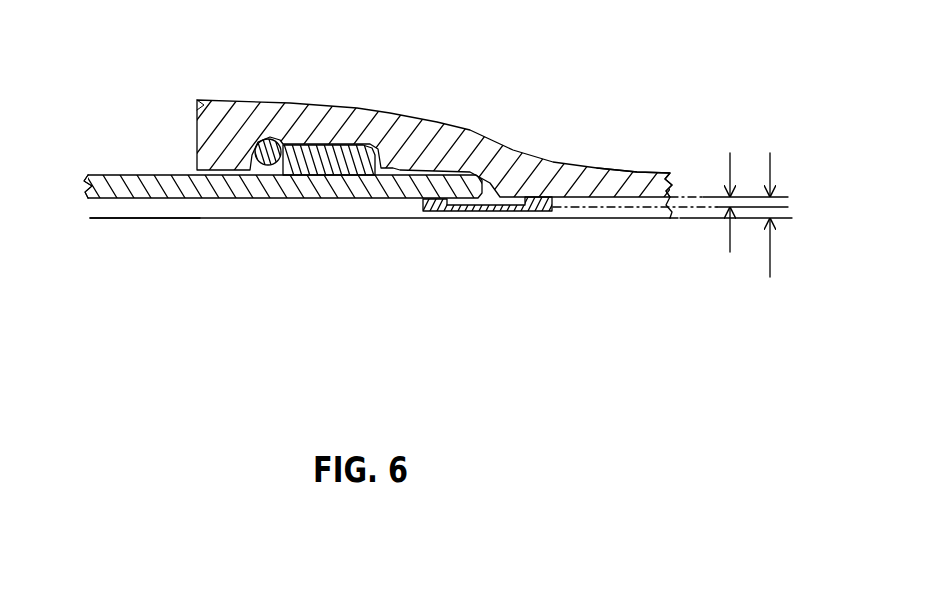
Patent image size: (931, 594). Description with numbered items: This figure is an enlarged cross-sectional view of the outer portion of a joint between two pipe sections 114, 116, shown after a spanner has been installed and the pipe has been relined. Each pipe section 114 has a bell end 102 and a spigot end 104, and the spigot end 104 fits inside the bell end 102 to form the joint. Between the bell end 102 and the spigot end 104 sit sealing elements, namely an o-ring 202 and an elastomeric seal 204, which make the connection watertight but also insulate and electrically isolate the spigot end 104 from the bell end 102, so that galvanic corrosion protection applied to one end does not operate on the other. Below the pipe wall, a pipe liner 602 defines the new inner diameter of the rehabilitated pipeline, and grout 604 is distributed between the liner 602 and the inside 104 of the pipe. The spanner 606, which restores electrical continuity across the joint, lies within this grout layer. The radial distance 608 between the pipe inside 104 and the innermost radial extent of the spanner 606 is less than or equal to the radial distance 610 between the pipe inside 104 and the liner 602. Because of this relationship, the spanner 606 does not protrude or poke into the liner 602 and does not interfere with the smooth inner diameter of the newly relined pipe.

The bell end 102 is at (288, 103).
The spigot end 104 is at (227, 200).
The pipe section 114 is at (107, 198).
The pipe section 116 is at (632, 168).
The o-ring 202 is at (255, 140).
The elastomeric seal 204 is at (375, 143).
The pipe liner 602 is at (343, 220).
The grout 604 is at (273, 210).
The spanner 606 is at (525, 200).
The distance 608 is at (728, 252).
The distance 610 is at (768, 277).